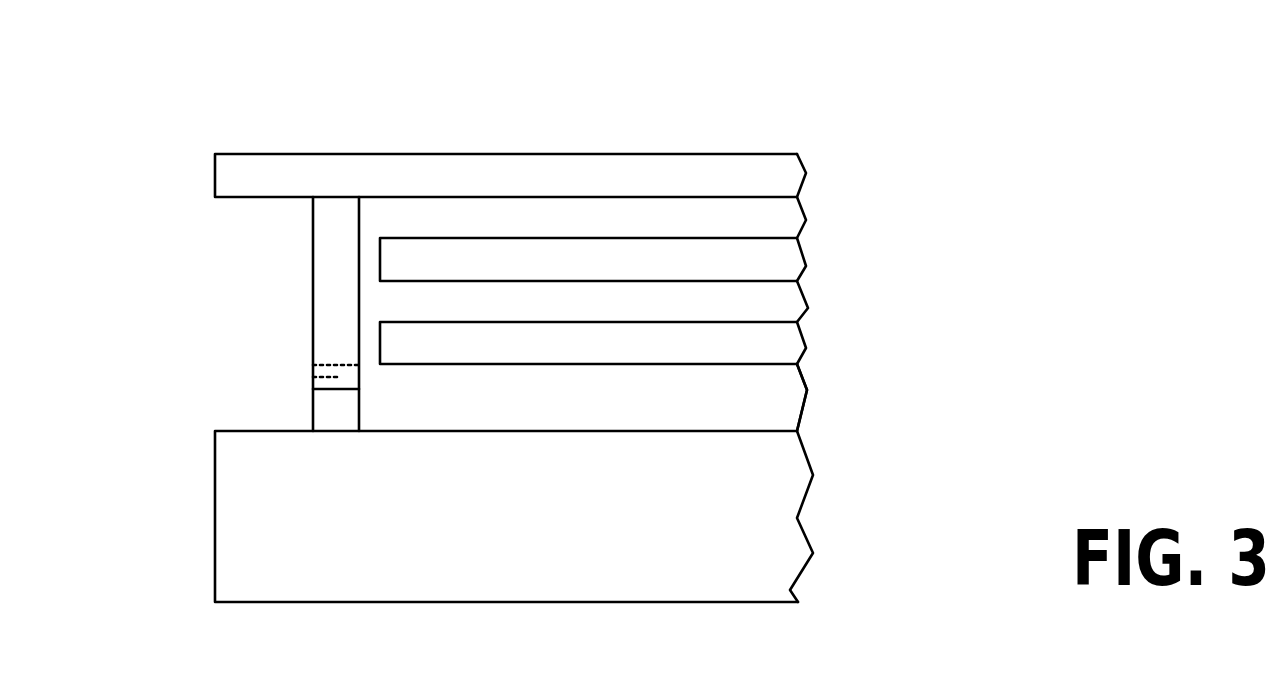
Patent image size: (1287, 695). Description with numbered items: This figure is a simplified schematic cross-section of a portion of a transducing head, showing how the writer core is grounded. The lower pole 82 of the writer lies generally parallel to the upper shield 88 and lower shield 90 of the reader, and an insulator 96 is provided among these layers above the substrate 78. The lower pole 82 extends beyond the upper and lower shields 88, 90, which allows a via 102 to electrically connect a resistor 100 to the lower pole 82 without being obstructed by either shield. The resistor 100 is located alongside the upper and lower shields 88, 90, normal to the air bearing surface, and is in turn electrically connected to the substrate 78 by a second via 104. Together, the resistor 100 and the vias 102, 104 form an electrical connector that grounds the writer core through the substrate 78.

The substrate 78 is at (775, 570).
The lower pole 82 is at (575, 180).
The upper shield 88 is at (775, 255).
The lower shield 90 is at (772, 340).
The insulator 96 is at (772, 408).
The resistor 100 is at (313, 377).
The via 102 is at (313, 282).
The via 104 is at (327, 407).